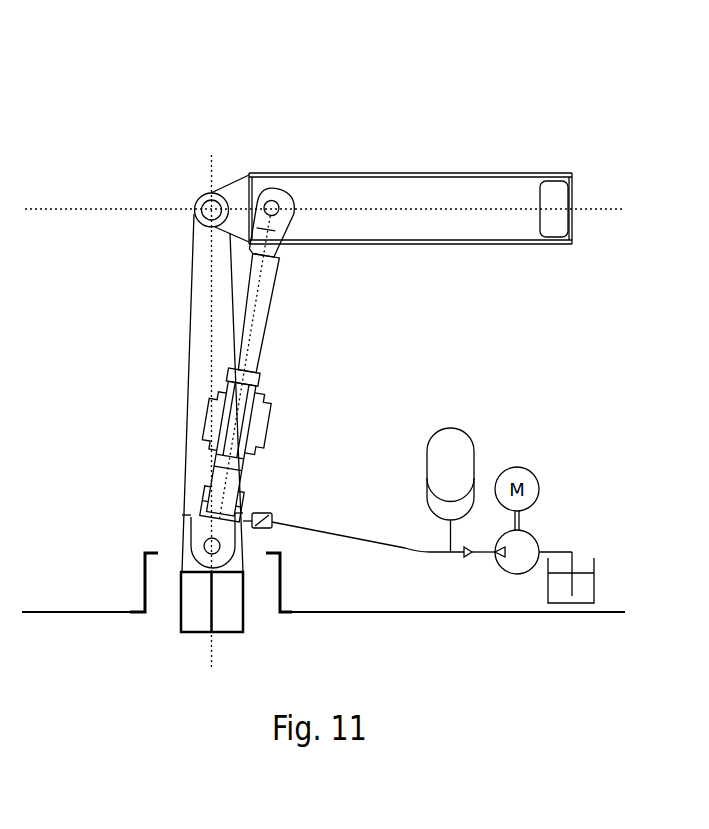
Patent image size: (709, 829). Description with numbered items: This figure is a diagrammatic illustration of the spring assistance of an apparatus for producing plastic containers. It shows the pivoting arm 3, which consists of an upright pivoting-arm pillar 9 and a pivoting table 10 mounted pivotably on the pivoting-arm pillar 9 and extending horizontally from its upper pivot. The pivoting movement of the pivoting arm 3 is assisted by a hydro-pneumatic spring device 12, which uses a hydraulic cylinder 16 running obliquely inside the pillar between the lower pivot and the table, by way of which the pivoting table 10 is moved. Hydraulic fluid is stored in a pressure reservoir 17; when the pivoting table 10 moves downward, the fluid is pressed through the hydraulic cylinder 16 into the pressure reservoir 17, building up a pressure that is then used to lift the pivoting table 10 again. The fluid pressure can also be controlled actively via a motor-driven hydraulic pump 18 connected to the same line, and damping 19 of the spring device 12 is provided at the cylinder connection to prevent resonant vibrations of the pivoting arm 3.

The pivoting arm 3 is at (415, 196).
The pivoting table 10 is at (482, 190).
The pivoting-arm pillar 9 is at (205, 357).
The hydraulic cylinder 16 is at (247, 352).
The hydro-pneumatic spring device 12 is at (233, 424).
The damping 19 is at (262, 517).
The pressure reservoir 17 is at (459, 457).
The hydraulic pump 18 is at (527, 538).